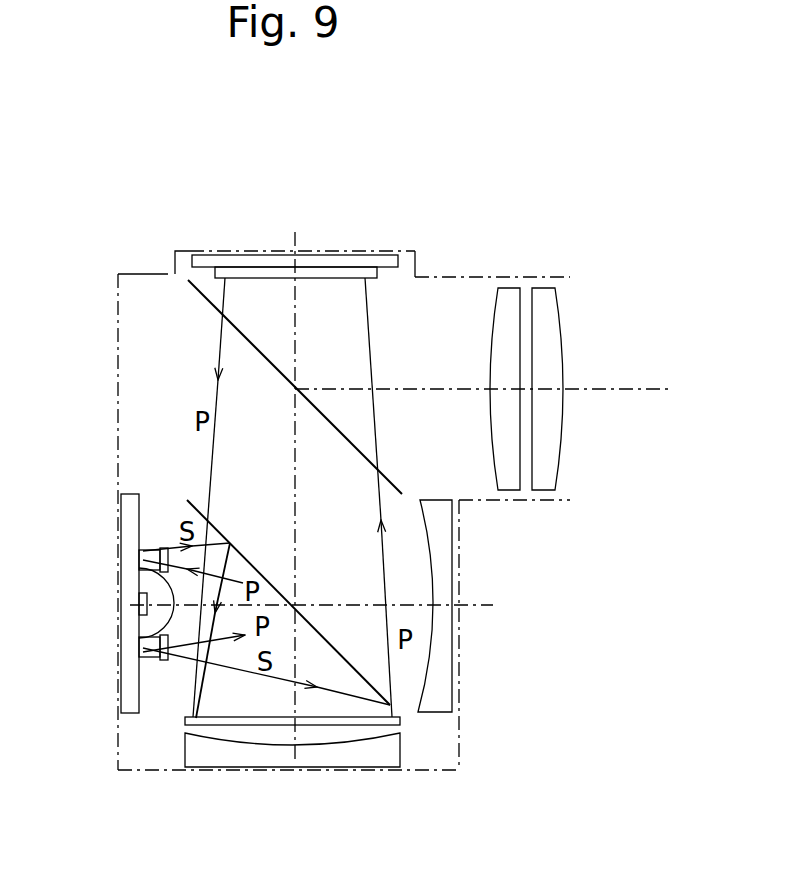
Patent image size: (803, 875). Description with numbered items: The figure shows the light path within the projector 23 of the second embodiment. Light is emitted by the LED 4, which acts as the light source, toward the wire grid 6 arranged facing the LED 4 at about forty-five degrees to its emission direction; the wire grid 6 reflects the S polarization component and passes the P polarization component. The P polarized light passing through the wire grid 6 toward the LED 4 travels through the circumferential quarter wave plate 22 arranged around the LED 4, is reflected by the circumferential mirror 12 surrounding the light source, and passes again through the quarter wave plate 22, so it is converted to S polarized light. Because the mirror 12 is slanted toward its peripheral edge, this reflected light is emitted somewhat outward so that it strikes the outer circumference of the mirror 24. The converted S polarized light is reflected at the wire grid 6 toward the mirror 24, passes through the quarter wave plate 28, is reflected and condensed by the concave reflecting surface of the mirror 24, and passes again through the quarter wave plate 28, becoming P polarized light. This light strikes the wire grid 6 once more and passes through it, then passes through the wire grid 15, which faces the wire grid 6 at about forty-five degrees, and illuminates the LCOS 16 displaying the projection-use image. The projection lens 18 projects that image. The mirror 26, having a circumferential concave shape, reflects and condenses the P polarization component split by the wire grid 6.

The LED 4 is at (150, 578).
The wire grid 6 is at (199, 497).
The mirror 12 is at (148, 540).
The wire grid 15 is at (194, 290).
The LCOS 16 is at (262, 263).
The projection lens 18 is at (590, 294).
The quarter wave plate 22 is at (167, 548).
The projector 23 is at (190, 208).
The mirror 24 is at (350, 758).
The mirror 26 is at (447, 553).
The quarter wave plate 28 is at (400, 729).